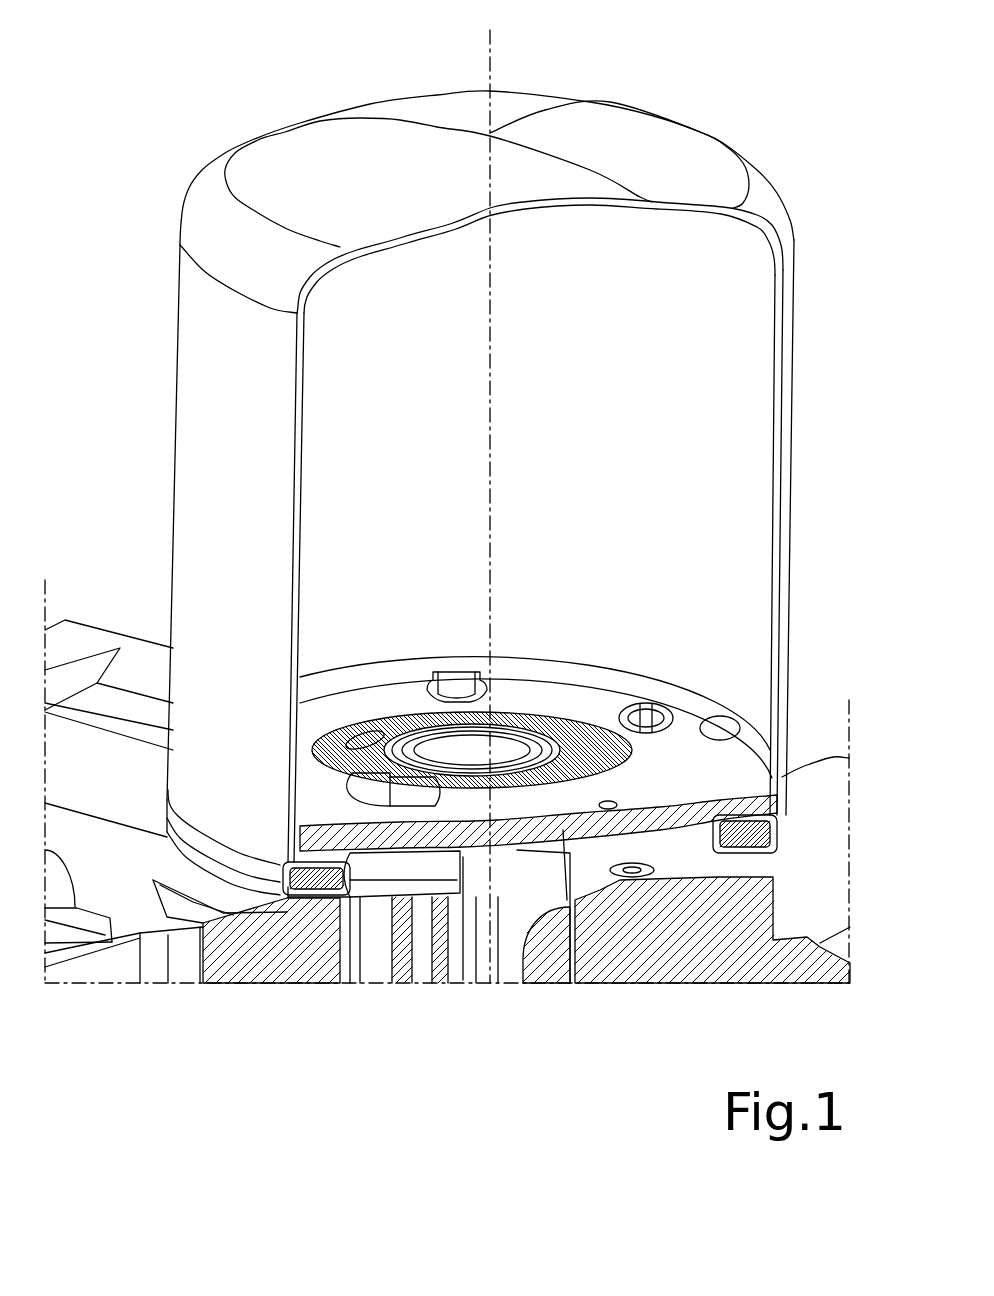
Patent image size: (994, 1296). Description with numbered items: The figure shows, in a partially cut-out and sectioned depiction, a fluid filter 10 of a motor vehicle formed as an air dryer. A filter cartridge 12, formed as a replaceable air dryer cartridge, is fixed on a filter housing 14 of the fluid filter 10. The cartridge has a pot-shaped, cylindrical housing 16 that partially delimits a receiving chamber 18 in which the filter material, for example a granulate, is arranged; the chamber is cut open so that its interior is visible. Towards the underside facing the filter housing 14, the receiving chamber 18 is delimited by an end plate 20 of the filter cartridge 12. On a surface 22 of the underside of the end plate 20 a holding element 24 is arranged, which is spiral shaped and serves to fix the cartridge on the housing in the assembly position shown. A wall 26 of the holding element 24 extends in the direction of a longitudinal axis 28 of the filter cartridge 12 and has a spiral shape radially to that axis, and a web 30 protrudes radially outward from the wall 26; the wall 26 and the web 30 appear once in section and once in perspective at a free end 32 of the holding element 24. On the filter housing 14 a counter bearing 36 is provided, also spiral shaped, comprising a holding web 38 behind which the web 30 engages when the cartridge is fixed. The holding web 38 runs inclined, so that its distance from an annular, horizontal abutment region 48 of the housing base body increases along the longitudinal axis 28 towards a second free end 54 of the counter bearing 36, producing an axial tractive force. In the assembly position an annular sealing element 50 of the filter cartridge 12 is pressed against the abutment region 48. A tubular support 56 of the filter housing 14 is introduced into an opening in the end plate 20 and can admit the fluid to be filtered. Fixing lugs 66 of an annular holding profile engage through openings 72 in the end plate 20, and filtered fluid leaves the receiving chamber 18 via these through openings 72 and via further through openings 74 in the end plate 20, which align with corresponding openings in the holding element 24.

The fluid filter 10 is at (248, 100).
The filter cartridge 12 is at (676, 148).
The filter housing 14 is at (137, 713).
The housing 16 is at (788, 540).
The receiving chamber 18 is at (645, 391).
The end plate 20 is at (557, 717).
The surface 22 is at (523, 847).
The holding element 24 is at (443, 913).
The wall 26 is at (563, 830).
The longitudinal axis 28 is at (490, 50).
The web 30 is at (545, 897).
The free end 32 is at (563, 830).
The counter bearing 36 is at (667, 857).
The holding web 38 is at (608, 801).
The abutment region 48 is at (287, 897).
The sealing element 50 is at (777, 847).
The second free end 54 is at (607, 807).
The tubular support 56 is at (502, 743).
The fixing lugs 66 is at (458, 687).
The through openings 72 is at (637, 713).
The further through openings 74 is at (375, 740).